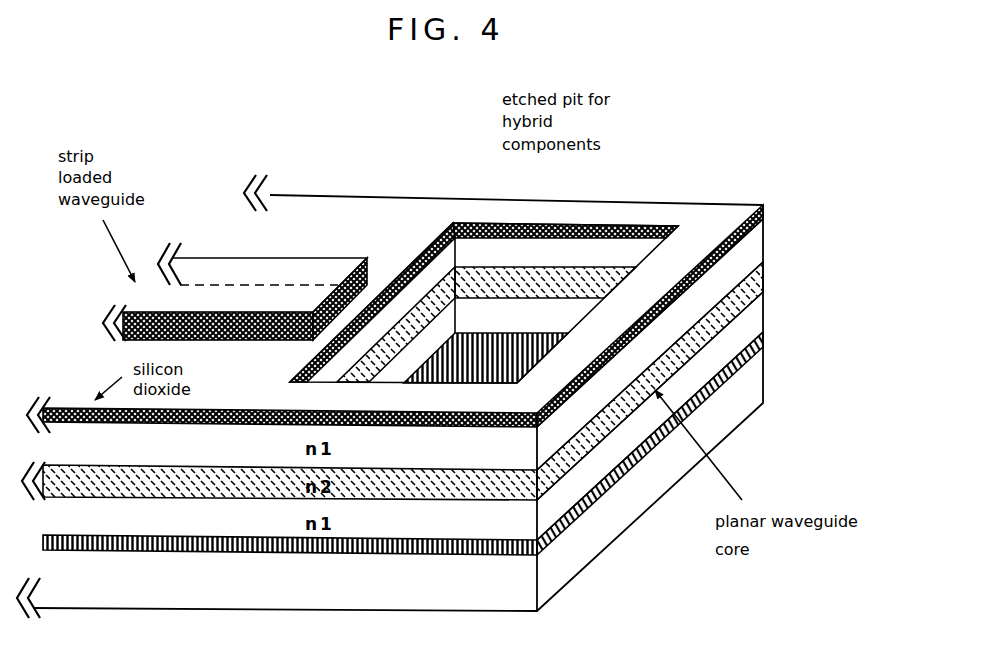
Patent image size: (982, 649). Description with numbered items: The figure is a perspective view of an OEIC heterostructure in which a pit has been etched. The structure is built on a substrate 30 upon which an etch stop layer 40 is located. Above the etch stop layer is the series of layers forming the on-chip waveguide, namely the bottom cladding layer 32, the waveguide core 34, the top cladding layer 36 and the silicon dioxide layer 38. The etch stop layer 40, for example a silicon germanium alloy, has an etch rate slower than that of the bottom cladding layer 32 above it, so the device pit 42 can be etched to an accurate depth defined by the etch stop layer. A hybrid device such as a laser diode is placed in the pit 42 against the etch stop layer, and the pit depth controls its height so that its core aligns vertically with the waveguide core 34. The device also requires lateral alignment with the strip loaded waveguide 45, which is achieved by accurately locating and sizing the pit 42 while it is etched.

The substrate 30 is at (750, 387).
The bottom cladding layer 32 is at (750, 323).
The waveguide core 34 is at (753, 283).
The top cladding layer 36 is at (752, 248).
The silicon dioxide layer 38 is at (765, 203).
The etch stop layer 40 is at (760, 336).
The device pit 42 is at (466, 333).
The strip loaded waveguide 45 is at (277, 268).